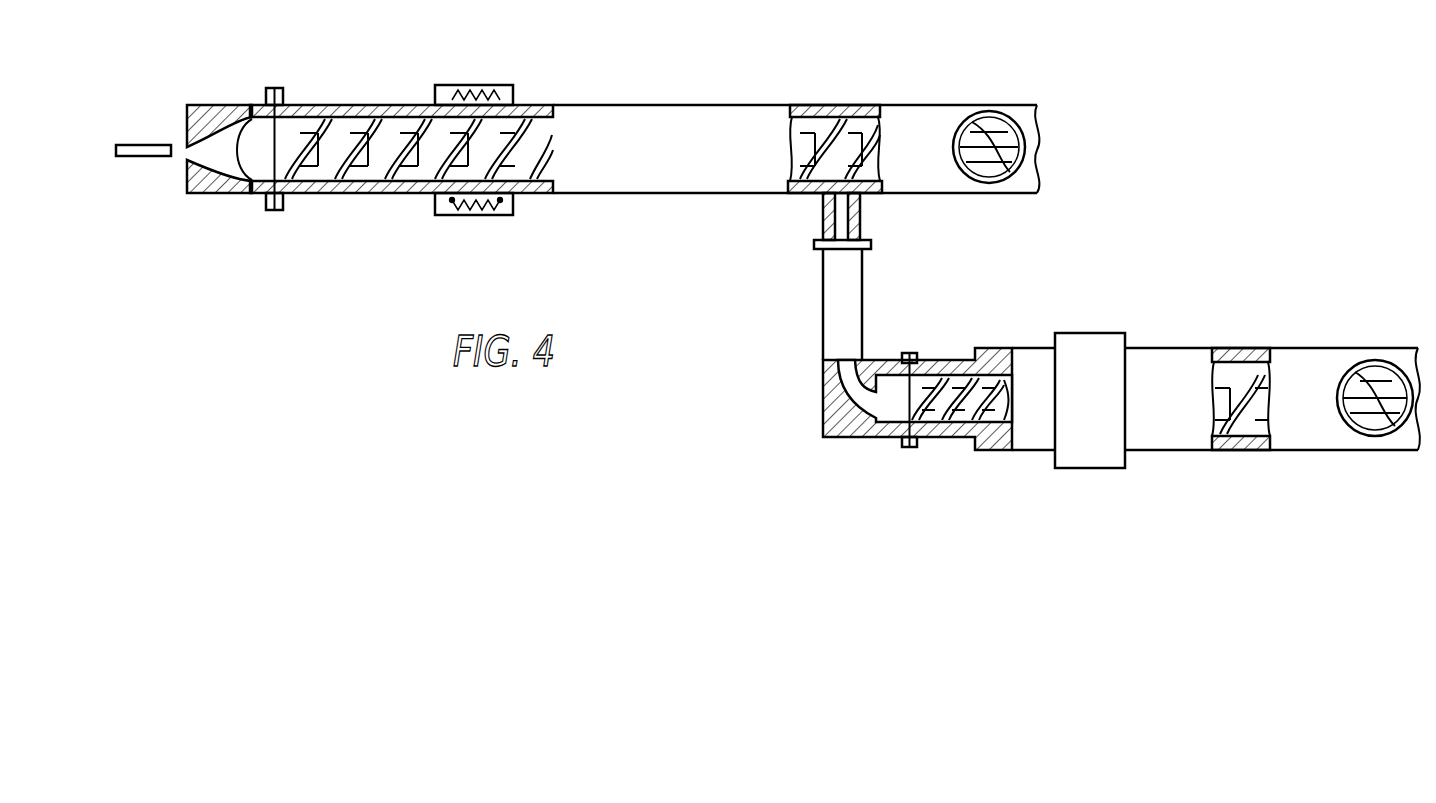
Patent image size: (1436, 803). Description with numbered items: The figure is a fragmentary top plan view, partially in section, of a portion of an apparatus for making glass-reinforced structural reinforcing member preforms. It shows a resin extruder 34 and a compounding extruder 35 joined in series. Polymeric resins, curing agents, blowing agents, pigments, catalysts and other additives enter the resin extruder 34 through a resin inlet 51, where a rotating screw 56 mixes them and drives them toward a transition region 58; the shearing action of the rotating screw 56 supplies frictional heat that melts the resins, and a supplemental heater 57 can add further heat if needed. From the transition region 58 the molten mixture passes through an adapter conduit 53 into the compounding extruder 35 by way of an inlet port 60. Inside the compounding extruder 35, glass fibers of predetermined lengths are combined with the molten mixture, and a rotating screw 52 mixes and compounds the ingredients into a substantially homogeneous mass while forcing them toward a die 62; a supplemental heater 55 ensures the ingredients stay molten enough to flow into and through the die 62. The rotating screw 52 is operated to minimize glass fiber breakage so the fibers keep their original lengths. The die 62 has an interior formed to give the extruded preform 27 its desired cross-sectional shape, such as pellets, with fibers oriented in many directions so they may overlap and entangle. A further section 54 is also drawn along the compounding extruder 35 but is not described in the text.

The preform 27 is at (145, 143).
The resin extruder 34 is at (1173, 348).
The compounding extruder 35 is at (692, 105).
The resin inlet 51 is at (1378, 362).
The rotating screw 52 is at (522, 110).
The adapter conduit 53 is at (823, 318).
The static mixer 54 is at (990, 113).
The supplemental heater 55 is at (458, 85).
The rotating screw 56 is at (1258, 348).
The supplemental heater 57 is at (1095, 333).
The transition region 58 is at (826, 393).
The inlet port 60 is at (831, 214).
The die 62 is at (228, 172).